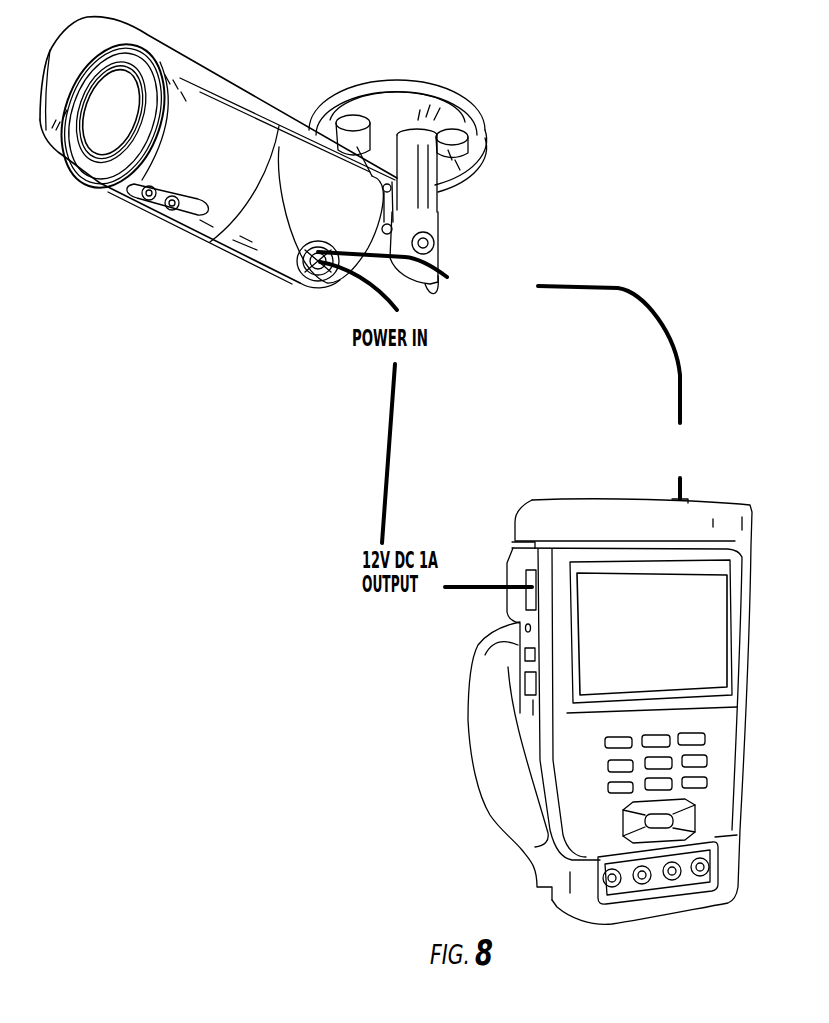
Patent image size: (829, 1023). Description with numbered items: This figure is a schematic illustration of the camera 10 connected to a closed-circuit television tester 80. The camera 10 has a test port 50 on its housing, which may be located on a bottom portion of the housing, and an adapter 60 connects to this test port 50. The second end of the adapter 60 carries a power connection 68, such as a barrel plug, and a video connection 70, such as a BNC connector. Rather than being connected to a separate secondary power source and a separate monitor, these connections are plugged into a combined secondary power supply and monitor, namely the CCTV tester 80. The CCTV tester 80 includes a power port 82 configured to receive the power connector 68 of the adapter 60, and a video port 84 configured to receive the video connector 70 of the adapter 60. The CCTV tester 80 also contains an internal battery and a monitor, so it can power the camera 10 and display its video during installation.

The camera 10 is at (268, 68).
The test port 50 is at (278, 290).
The adapter 60 is at (566, 255).
The video connection 70 is at (636, 457).
The video port 84 is at (655, 492).
The power connection 68 is at (464, 648).
The power port 82 is at (508, 601).
The CCTV tester 80 is at (768, 610).